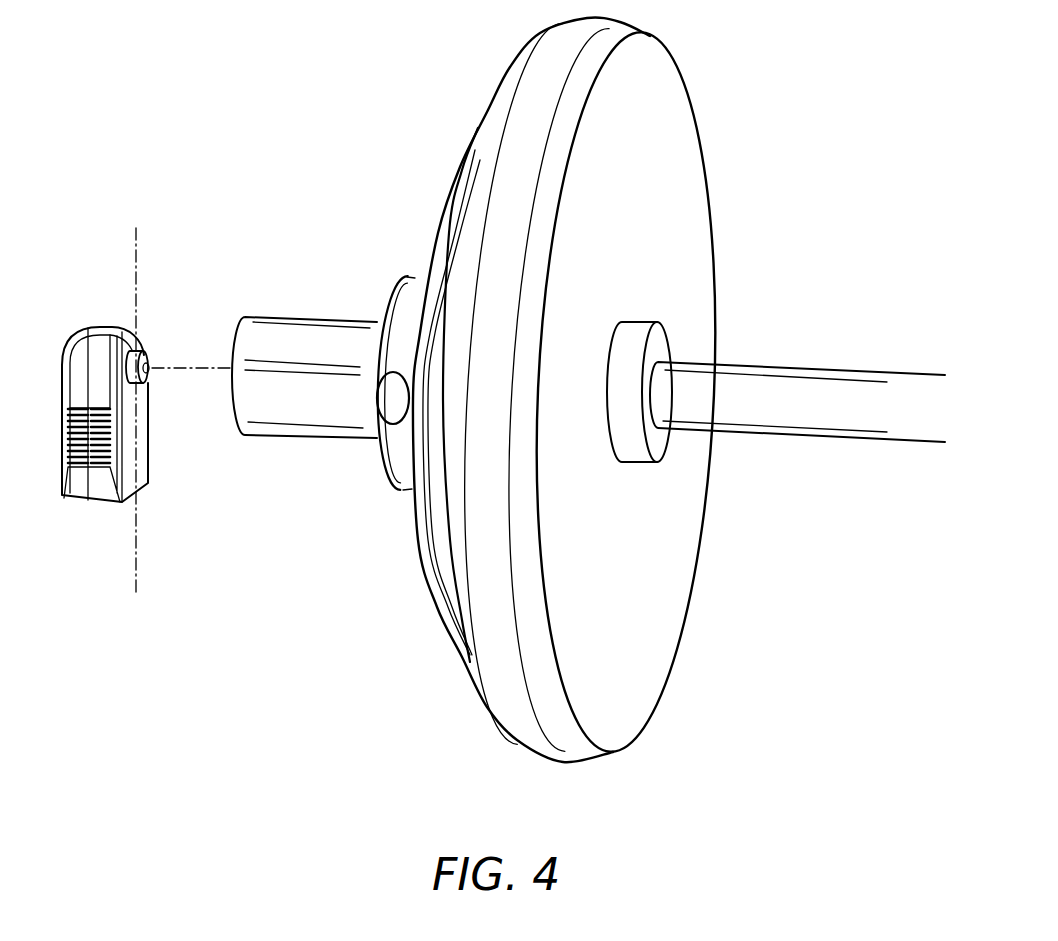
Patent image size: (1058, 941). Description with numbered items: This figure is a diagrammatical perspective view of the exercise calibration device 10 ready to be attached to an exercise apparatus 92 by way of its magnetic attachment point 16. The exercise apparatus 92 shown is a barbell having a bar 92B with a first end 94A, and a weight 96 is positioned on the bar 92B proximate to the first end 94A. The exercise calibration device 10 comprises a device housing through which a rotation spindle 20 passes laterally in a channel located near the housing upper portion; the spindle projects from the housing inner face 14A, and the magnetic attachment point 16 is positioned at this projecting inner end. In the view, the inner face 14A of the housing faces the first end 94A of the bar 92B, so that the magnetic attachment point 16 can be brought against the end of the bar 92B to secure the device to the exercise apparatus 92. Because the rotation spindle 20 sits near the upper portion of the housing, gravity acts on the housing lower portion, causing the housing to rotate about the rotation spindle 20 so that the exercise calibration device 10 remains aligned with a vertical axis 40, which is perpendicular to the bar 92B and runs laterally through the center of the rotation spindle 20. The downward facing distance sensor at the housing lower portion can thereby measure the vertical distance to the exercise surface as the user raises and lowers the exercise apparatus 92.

The exercise calibration device 10 is at (128, 380).
The inner face 14A is at (142, 442).
The magnetic attachment point 16 is at (152, 368).
The rotation spindle 20 is at (147, 355).
The vertical axis 40 is at (137, 537).
The exercise apparatus 92 is at (737, 364).
The bar 92B is at (817, 393).
The first end 94A is at (290, 338).
The weights 96 is at (663, 87).